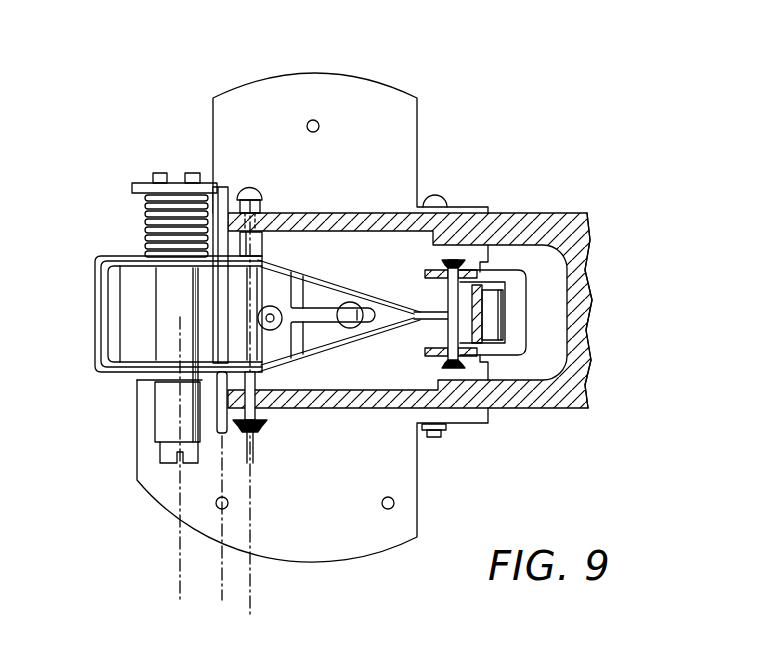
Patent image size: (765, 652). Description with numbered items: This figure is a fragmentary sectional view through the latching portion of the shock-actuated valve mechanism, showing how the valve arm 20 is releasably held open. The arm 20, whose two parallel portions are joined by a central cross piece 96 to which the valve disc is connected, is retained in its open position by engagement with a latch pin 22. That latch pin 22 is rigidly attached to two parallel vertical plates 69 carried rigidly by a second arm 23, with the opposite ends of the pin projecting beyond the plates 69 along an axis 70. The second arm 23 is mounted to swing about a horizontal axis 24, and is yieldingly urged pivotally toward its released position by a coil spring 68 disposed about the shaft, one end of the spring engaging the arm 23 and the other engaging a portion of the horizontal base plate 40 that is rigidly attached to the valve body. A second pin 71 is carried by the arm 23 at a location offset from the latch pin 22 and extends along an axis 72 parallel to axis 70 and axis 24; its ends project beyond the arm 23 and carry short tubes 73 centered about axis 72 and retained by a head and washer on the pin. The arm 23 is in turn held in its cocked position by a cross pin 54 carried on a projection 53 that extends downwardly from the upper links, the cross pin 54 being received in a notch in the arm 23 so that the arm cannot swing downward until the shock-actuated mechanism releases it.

The arm 20 is at (439, 273).
The latch pin 22 is at (221, 187).
The second arm 23 is at (326, 350).
The horizontal axis 24 is at (180, 535).
The base plate 40 is at (408, 103).
The projection 53 is at (517, 293).
The cross pin 54 is at (447, 333).
The coil spring 68 is at (140, 208).
The parallel vertical plates 69 is at (258, 262).
The axis 70 is at (220, 572).
The second pin 71 is at (254, 189).
The axis 72 is at (252, 583).
The short tubes 73 is at (261, 204).
The cross piece 96 is at (585, 316).